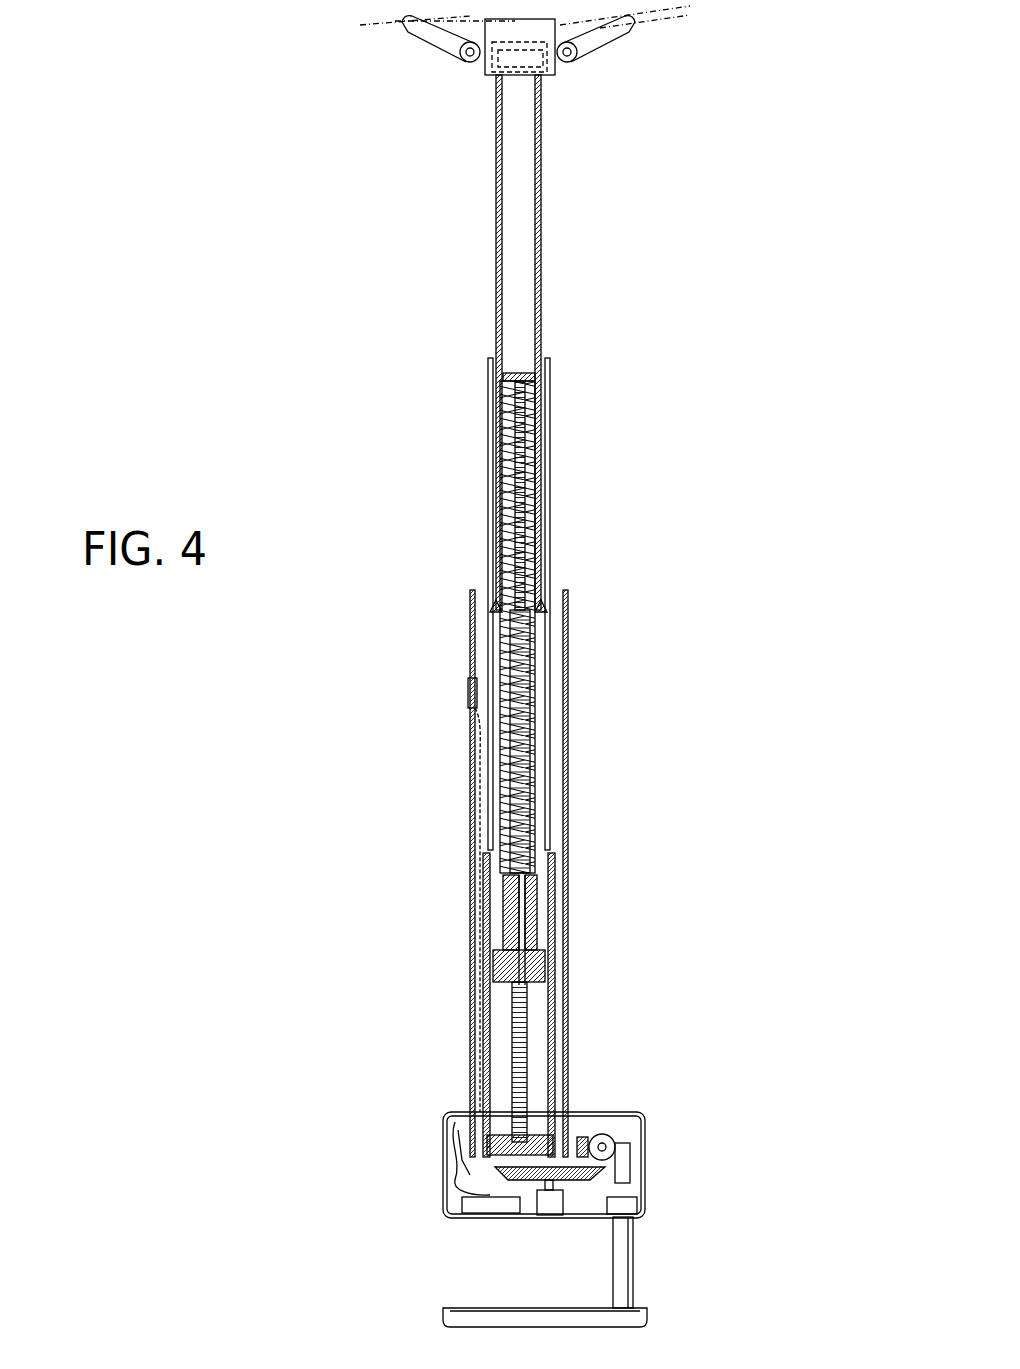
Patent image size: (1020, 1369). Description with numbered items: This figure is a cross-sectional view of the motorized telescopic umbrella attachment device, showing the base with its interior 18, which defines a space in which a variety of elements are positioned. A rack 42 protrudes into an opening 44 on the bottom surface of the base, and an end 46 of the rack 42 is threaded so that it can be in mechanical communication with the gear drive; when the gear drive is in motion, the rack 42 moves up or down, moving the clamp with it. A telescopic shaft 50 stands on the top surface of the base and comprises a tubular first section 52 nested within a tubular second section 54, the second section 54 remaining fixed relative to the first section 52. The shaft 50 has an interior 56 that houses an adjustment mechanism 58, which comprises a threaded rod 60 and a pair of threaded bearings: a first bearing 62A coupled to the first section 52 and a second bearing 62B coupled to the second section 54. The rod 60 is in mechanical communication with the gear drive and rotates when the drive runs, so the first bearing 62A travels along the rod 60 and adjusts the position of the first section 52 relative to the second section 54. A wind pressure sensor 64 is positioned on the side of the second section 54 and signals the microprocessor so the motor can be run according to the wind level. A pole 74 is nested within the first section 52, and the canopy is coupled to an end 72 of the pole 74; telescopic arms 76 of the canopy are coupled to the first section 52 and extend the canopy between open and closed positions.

The interior 18 is at (617, 1135).
The rack 42 is at (630, 1262).
The opening 44 is at (640, 1230).
The end 46 is at (623, 1160).
The shaft 50 is at (597, 442).
The first section 52 is at (550, 493).
The second section 54 is at (568, 665).
The interior 56 is at (557, 613).
The adjustment mechanism 58 is at (517, 895).
The rod 60 is at (512, 820).
The first bearing 62A is at (540, 970).
The second bearing 62B is at (538, 1135).
The sensor 64 is at (472, 692).
The end 72 is at (518, 65).
The pole 74 is at (542, 215).
The telescopic arms 76 is at (433, 33).